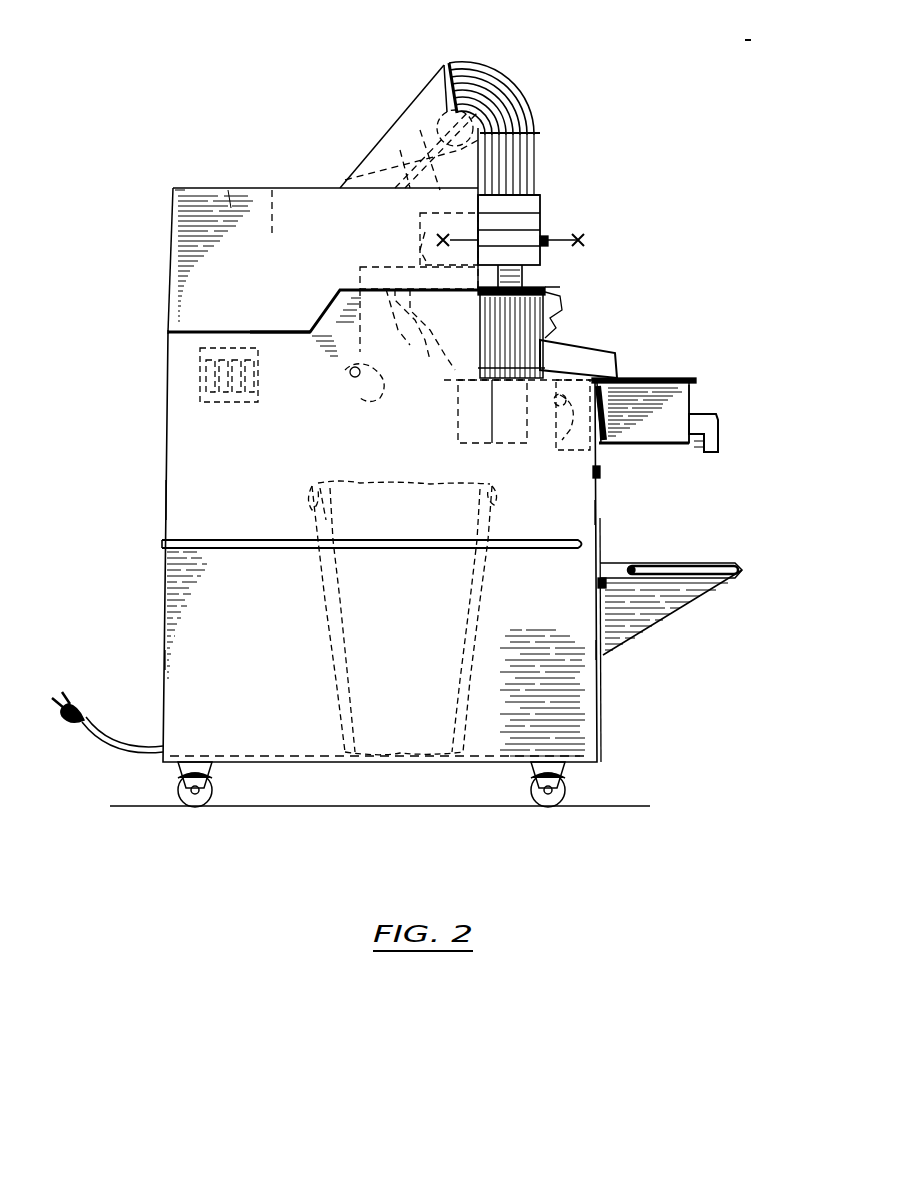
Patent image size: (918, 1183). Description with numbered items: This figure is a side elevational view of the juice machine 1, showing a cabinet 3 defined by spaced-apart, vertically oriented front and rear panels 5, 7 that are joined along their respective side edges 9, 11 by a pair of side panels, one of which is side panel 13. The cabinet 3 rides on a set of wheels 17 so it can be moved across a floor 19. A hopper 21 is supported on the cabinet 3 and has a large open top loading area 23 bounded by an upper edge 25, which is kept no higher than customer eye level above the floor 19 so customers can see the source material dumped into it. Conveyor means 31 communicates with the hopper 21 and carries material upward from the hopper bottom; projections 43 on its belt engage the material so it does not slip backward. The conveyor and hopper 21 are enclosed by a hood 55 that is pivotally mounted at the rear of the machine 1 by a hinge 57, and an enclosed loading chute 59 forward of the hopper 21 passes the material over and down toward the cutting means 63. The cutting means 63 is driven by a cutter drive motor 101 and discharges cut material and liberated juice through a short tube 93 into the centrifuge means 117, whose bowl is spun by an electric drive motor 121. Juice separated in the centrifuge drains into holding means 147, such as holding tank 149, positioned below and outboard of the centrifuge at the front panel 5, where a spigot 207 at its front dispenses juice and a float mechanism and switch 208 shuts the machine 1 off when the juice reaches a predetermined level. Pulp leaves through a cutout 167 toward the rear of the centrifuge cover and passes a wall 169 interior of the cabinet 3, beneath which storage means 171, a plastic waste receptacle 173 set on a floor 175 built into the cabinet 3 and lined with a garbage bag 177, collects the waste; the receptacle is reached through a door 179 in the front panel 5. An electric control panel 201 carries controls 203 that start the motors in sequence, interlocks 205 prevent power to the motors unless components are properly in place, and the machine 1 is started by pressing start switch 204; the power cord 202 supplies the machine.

The machine 1 is at (178, 377).
The cabinet 3 is at (178, 495).
The front panel 5 is at (600, 505).
The rear panel 7 is at (172, 602).
The side edge 9 is at (601, 668).
The side edge 11 is at (165, 661).
The side panel 13 is at (560, 688).
The wheels 17 is at (214, 788).
The floor 19 is at (626, 806).
The hopper 21 is at (270, 188).
The open top loading area 23 is at (232, 204).
The upper edge 25 is at (182, 188).
The conveyor means 31 is at (410, 72).
The projections 43 is at (420, 115).
The hood 55 is at (228, 190).
The hinge 57 is at (168, 332).
The loading chute 59 is at (490, 70).
The cutting means 63 is at (560, 232).
The short tube 93 is at (545, 284).
The cutter drive motor 101 is at (390, 196).
The centrifuge means 117 is at (582, 300).
The electric drive motor 121 is at (458, 418).
The holding means 147 is at (655, 367).
The holding tank 149 is at (691, 399).
The cutout 167 is at (417, 300).
The wall 169 is at (380, 395).
The storage means 171 is at (296, 520).
The waste receptacle 173 is at (330, 660).
The floor 175 is at (310, 756).
The garbage bag 177 is at (352, 656).
The door 179 is at (650, 612).
The electric control panel 201 is at (262, 330).
The power cord 202 is at (88, 742).
The controls 203 is at (242, 402).
The start switch 204 is at (600, 470).
The interlocks 205 is at (410, 268).
The spigot 207 is at (718, 446).
The float mechanism and switch 208 is at (568, 450).